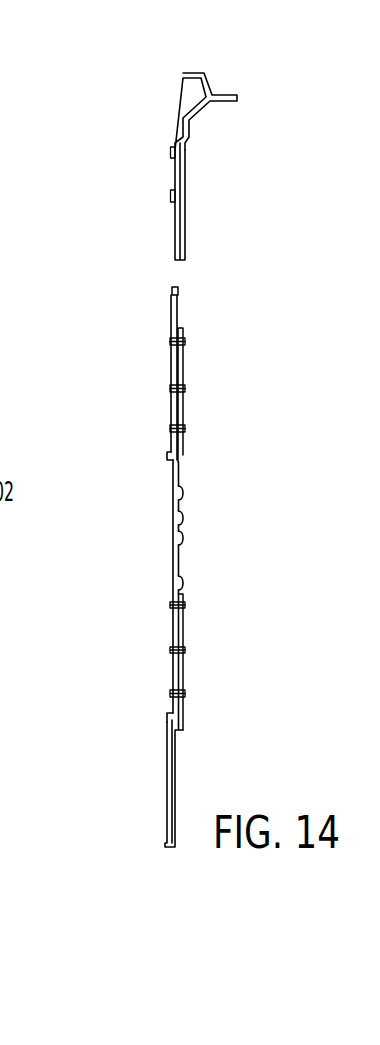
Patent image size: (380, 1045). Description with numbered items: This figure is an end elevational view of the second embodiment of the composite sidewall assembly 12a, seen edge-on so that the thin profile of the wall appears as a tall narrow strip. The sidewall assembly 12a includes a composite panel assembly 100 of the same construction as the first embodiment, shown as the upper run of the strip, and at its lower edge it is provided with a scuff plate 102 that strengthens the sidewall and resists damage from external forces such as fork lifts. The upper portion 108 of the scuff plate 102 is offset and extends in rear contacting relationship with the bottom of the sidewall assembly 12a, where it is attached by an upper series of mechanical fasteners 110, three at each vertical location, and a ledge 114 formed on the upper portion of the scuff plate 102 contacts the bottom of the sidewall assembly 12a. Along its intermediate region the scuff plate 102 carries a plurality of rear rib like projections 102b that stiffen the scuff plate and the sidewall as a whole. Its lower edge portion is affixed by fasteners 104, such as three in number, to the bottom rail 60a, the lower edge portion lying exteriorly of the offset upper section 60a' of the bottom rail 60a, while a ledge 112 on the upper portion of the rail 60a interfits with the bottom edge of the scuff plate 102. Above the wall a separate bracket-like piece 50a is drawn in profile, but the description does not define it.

The hook portion of mounting bracket 50a is at (208, 94).
The sidewall assembly 12a is at (175, 231).
The composite panel assembly 100 is at (178, 297).
The clip 110 is at (182, 343).
The upper portion 108 is at (182, 400).
The ledge 114 is at (170, 452).
The scuff plate 102 is at (183, 518).
The rear rib like projections 102b is at (183, 495).
The offset upper section 60a' is at (240, 662).
The fasteners 104 is at (182, 605).
The ledge 112 is at (167, 712).
The bottom rail 60a is at (217, 783).